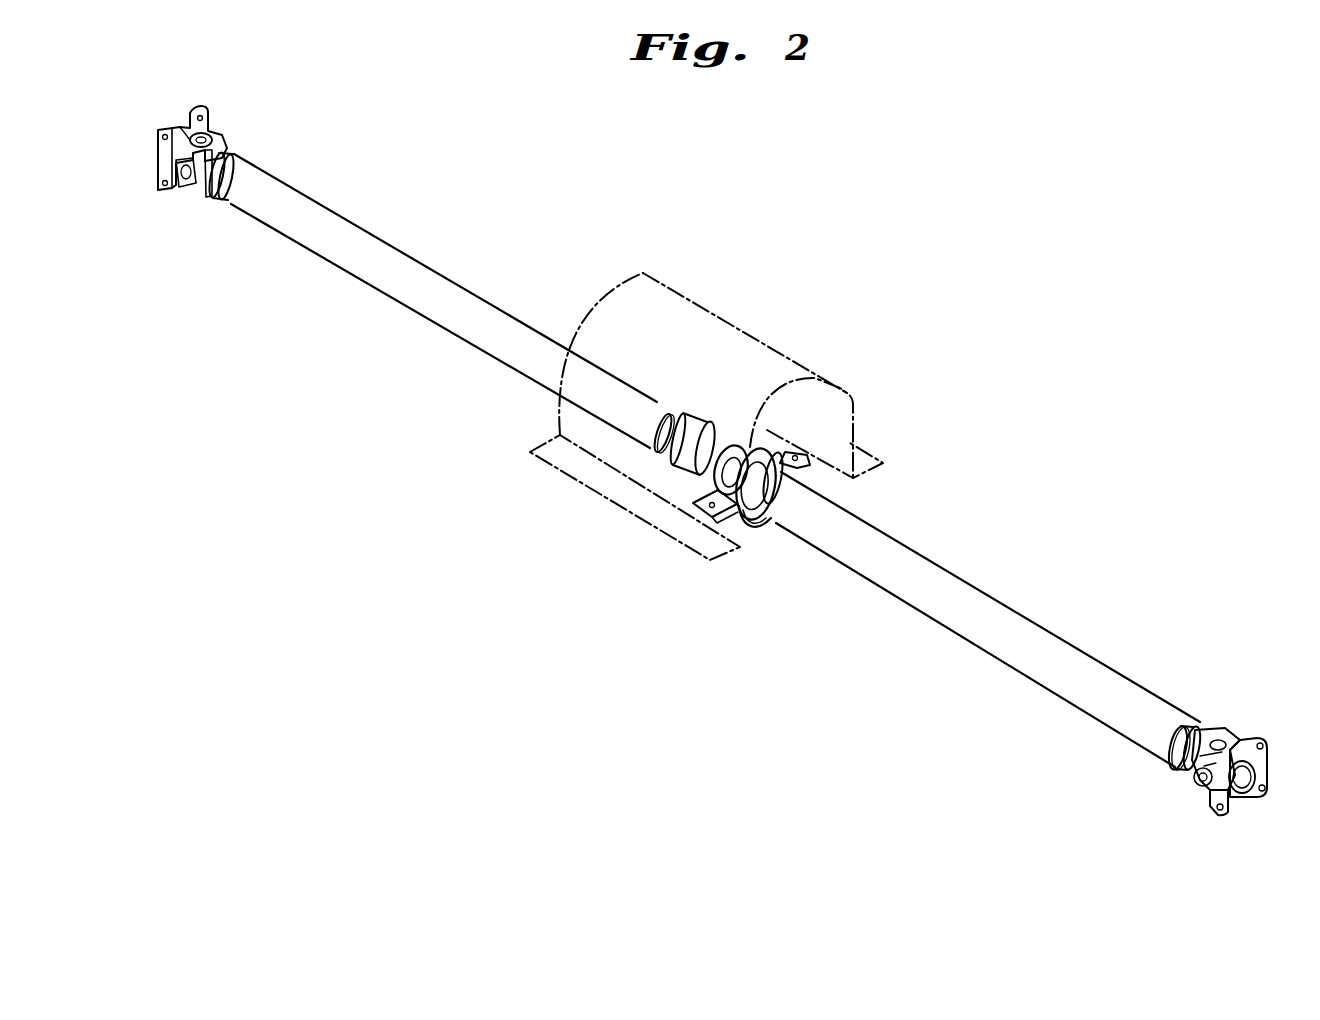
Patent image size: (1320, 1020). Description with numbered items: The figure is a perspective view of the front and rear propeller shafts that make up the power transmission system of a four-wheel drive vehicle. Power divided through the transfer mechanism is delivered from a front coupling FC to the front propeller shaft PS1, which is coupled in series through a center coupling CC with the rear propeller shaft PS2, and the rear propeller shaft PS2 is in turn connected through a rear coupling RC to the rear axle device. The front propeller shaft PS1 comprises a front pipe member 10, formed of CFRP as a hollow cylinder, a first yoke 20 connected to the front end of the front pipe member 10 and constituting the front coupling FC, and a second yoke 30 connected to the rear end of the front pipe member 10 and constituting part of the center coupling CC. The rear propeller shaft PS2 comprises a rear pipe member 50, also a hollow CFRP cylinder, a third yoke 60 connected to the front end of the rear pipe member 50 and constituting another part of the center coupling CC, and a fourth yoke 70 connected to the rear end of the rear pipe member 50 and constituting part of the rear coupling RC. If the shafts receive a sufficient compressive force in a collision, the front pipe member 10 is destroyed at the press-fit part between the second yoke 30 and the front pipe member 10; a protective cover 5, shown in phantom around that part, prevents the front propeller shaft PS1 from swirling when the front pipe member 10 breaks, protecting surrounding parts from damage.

The front coupling FC is at (221, 131).
The first yoke 20 is at (183, 187).
The front propeller shaft PS1 is at (399, 243).
The front pipe member 10 is at (362, 260).
The protective cover 5 is at (752, 325).
The second yoke 30 is at (745, 445).
The third yoke 60 is at (797, 471).
The center coupling CC is at (757, 533).
The rear propeller shaft PS2 is at (983, 590).
The rear pipe member 50 is at (928, 600).
The fourth yoke 70 is at (1213, 733).
The rear coupling RC is at (1203, 793).